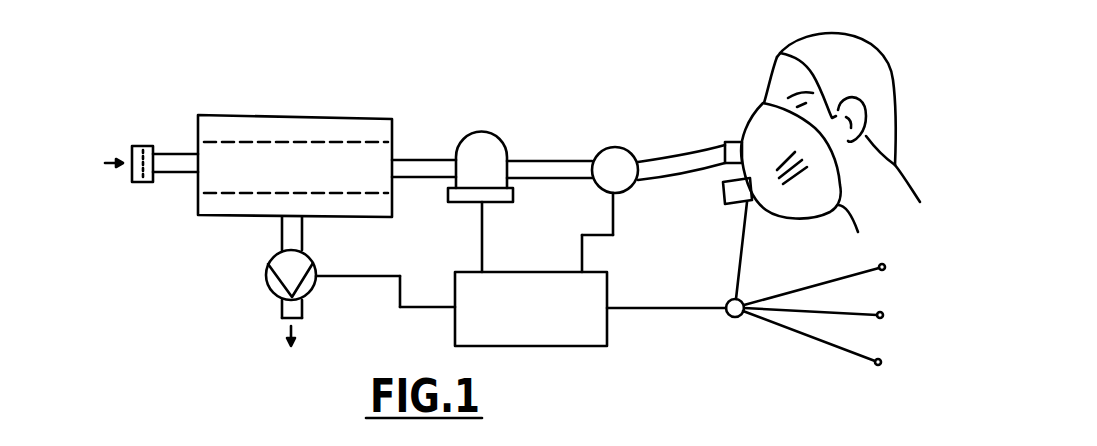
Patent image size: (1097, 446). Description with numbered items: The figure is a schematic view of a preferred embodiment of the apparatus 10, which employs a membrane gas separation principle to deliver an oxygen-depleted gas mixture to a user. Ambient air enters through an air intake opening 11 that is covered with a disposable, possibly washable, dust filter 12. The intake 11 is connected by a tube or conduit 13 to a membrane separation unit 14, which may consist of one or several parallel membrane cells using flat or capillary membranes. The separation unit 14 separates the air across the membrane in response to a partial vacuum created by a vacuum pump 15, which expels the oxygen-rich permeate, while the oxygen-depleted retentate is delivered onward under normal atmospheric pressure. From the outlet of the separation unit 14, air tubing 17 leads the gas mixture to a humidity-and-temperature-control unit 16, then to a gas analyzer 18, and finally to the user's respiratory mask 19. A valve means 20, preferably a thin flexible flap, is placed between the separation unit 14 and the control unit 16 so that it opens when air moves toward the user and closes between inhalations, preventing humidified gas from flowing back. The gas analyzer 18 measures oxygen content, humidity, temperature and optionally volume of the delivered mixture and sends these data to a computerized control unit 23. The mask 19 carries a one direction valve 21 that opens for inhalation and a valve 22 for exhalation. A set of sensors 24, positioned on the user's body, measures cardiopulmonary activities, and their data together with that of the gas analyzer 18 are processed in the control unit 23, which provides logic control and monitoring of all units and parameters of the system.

The apparatus 10 is at (185, 266).
The air intake opening 11 is at (140, 145).
The dust filter 12 is at (137, 183).
The conduit 13 is at (173, 164).
The membrane separation unit 14 is at (290, 157).
The vacuum pump 15 is at (288, 275).
The humidity-and-temperature-control unit 16 is at (480, 147).
The air tubing 17 is at (543, 168).
The gas analyzer 18 is at (610, 165).
The respiratory mask 19 is at (767, 132).
The valve means 20 is at (438, 166).
The one direction valve 21 is at (731, 152).
The exhalation valve 22 is at (729, 199).
The computerized control unit 23 is at (541, 321).
The set of sensors 24 is at (732, 318).